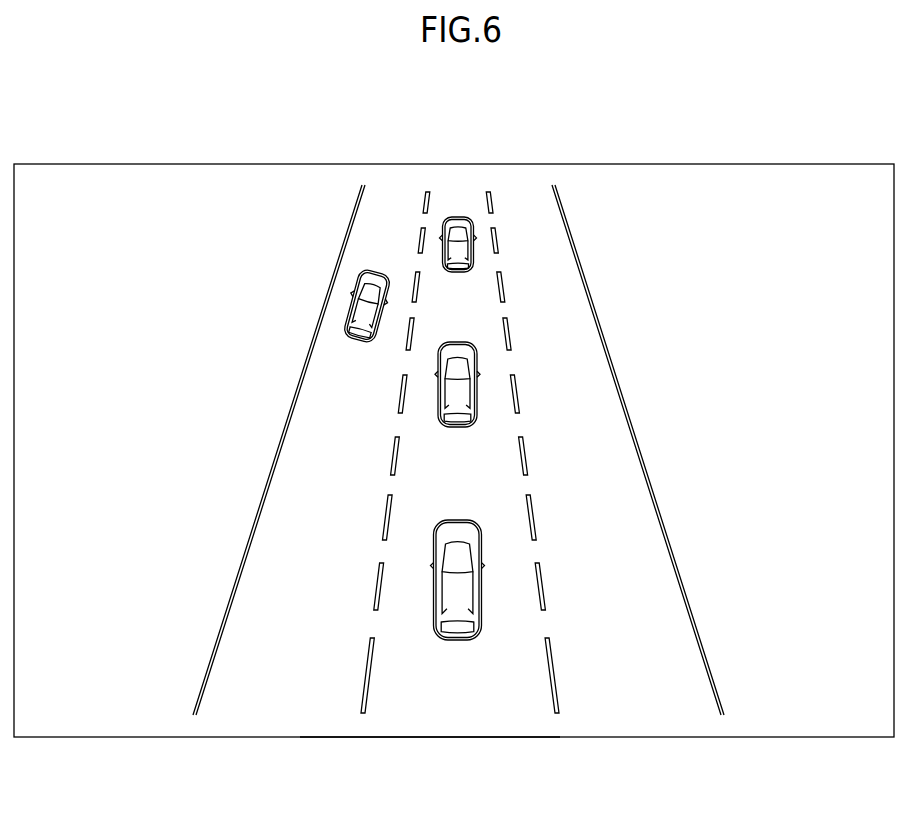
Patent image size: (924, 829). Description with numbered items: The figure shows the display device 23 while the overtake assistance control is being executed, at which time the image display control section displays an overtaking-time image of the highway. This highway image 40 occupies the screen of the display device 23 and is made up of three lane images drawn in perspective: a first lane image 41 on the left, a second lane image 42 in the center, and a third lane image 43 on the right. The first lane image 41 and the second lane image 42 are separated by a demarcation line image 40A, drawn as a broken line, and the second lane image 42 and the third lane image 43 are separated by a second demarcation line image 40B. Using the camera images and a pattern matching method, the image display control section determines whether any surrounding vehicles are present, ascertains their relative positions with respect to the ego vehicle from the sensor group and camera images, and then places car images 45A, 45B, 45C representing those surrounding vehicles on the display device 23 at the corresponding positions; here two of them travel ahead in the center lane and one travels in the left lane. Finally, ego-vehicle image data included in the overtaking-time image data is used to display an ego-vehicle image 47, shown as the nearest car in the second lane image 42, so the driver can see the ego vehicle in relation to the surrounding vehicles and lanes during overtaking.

The display device 23 is at (703, 164).
The highway image 40 is at (468, 450).
The demarcation line image 40A is at (378, 575).
The demarcation line image 40B is at (548, 682).
The first lane image 41 is at (284, 510).
The second lane image 42 is at (402, 707).
The third lane image 43 is at (678, 657).
The car image 45A is at (458, 427).
The car image 45B is at (455, 217).
The car image 45C is at (365, 340).
The ego-vehicle image 47 is at (458, 640).